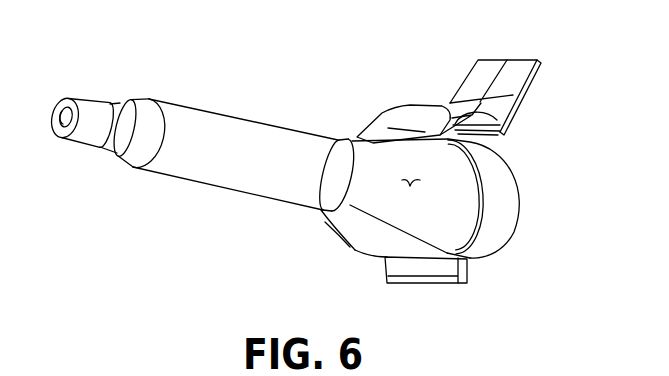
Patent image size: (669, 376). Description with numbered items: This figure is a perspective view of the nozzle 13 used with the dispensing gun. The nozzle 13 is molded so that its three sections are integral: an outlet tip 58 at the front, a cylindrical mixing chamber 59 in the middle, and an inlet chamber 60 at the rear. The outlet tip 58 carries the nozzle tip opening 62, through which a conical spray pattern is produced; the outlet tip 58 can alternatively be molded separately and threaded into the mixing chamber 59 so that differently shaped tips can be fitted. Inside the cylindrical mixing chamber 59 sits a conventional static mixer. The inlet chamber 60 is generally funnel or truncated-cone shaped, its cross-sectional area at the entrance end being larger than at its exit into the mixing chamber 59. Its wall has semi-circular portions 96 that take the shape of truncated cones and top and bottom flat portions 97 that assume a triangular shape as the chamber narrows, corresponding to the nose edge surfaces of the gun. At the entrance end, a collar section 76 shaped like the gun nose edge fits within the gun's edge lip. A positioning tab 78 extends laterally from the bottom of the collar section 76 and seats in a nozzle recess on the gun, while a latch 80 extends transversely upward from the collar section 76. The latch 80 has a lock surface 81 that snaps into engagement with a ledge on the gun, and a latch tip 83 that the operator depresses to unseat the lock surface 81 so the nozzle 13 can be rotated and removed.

The nozzle 13 is at (344, 175).
The outlet tip 58 is at (88, 96).
The mixing chamber 59 is at (192, 99).
The inlet chamber 60 is at (383, 223).
The nozzle tip opening 62 is at (66, 121).
The collar section 76 is at (494, 208).
The positioning tab 78 is at (466, 273).
The latch 80 is at (412, 138).
The lock surface 81 is at (495, 128).
The latch tip 83 is at (483, 60).
The semi-circular portions 96 is at (408, 182).
The flat portions 97 is at (360, 143).